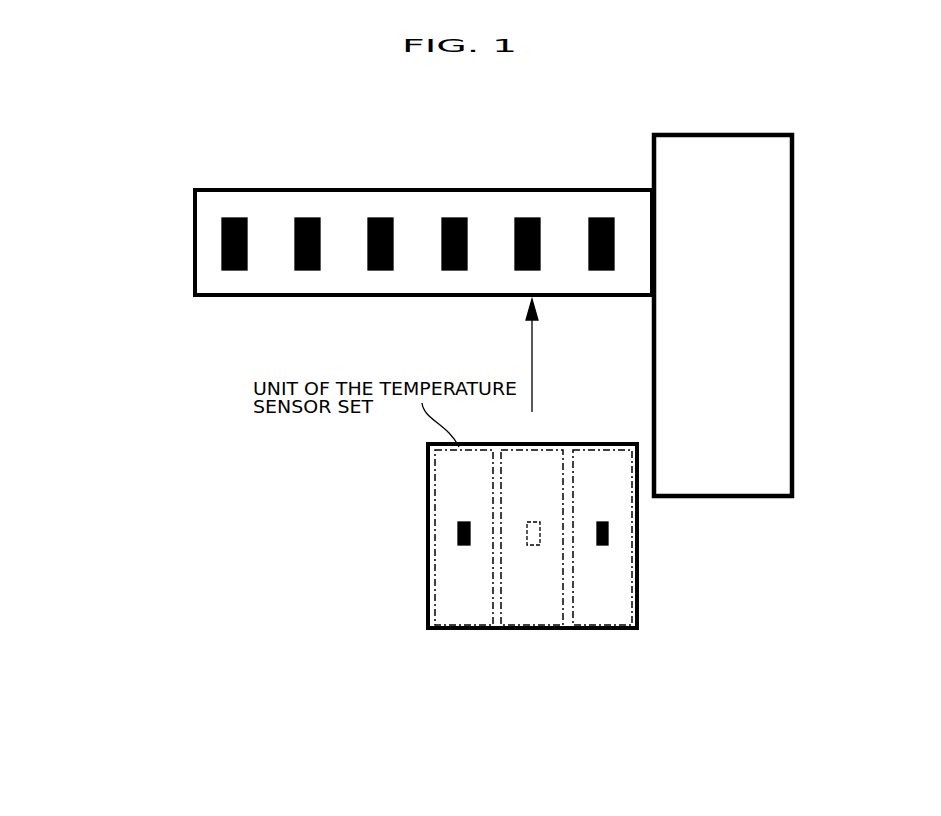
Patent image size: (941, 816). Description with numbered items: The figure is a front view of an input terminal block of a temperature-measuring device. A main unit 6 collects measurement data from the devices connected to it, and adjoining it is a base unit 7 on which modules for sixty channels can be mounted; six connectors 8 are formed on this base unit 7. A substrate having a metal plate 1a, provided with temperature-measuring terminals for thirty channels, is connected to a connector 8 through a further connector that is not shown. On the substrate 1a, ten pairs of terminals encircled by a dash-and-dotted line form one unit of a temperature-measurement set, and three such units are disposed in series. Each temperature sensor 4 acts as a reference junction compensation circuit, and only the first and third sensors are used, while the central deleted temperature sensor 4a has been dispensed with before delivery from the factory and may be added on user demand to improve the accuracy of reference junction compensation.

The base unit 7 is at (317, 190).
The connector 8 is at (383, 270).
The main unit 6 is at (723, 315).
The substrate having a metal plate 1a is at (477, 630).
The temperature sensor 4 is at (667, 565).
The deleted temperature sensor 4a is at (527, 522).